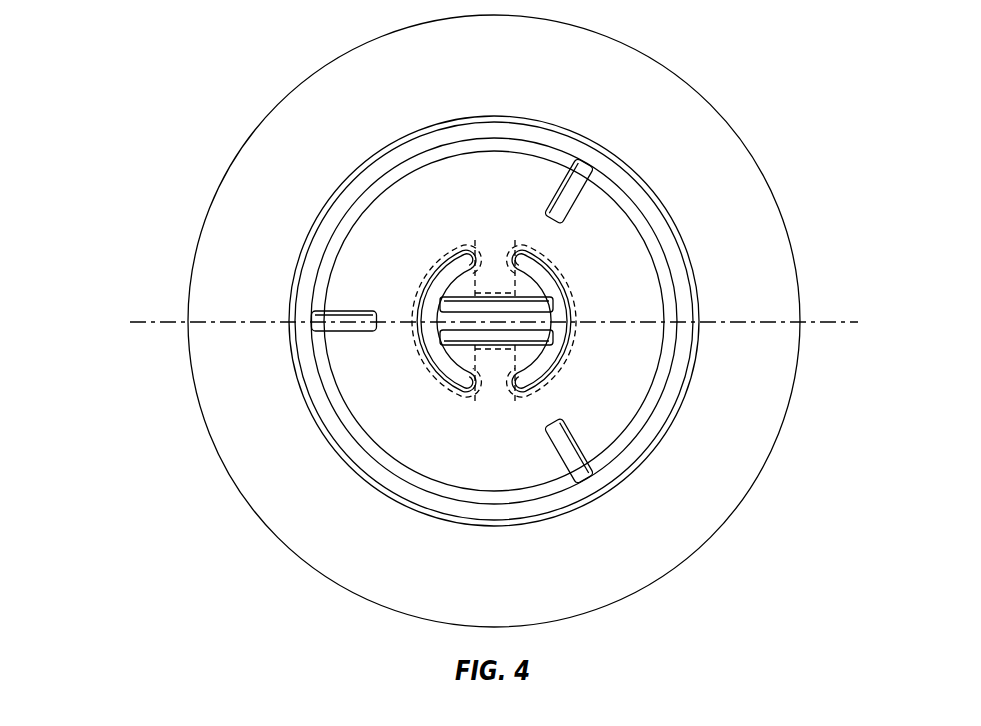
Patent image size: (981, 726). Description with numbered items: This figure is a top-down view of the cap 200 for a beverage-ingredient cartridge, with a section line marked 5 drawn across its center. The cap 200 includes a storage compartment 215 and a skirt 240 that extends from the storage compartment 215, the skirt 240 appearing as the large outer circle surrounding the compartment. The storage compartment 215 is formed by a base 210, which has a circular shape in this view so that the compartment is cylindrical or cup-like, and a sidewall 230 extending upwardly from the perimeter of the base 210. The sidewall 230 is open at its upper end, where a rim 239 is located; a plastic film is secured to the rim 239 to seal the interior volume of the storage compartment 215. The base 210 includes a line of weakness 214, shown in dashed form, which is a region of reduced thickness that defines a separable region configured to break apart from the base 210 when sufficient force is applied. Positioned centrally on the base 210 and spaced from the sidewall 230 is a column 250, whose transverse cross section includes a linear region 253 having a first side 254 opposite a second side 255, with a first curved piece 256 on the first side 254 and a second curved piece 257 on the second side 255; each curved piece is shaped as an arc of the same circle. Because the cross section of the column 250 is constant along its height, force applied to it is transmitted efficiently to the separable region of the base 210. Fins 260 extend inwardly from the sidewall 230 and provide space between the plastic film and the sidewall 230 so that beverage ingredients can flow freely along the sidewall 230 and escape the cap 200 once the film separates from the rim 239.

The cap 200 is at (806, 111).
The base 210 is at (648, 345).
The line of weakness 214 is at (580, 300).
The storage compartment 215 is at (489, 168).
The sidewall 230 is at (665, 385).
The rim 239 is at (538, 137).
The skirt 240 is at (690, 518).
The column 250 is at (457, 304).
The linear region 253 is at (486, 312).
The first side 254 is at (437, 337).
The second side 255 is at (542, 310).
The first curved piece 256 is at (442, 368).
The second curved piece 257 is at (543, 368).
The fins 260 is at (588, 192).
The section line 5- 5 is at (143, 330).